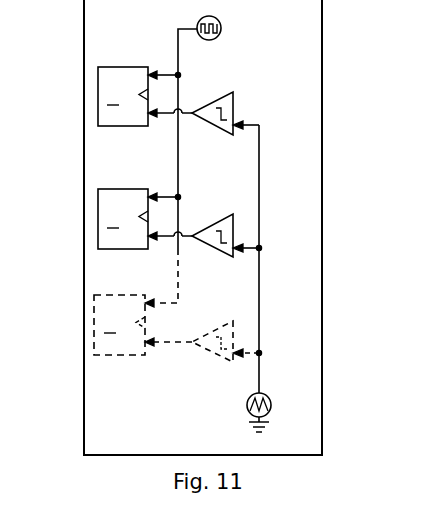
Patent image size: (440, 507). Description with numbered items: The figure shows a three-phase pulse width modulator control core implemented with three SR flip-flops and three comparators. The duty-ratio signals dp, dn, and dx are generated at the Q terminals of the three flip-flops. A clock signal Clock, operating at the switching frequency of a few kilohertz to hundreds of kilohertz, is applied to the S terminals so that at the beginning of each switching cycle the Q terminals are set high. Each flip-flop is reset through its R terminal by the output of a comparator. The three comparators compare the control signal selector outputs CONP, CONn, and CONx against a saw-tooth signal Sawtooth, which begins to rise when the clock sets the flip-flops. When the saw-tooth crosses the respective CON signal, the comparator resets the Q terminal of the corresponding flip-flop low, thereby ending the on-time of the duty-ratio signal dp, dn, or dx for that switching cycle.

The clock signal Clock is at (217, 159).
The duty-ratio signal dp is at (98, 75).
The duty-ratio signal dn is at (98, 197).
The duty-ratio signal dx is at (94, 303).
The control signal selector output CONp CONP is at (233, 100).
The control signal selector output CONn is at (233, 222).
The control signal selector output CONx is at (233, 329).
The saw-tooth signal Sawtooth is at (211, 279).